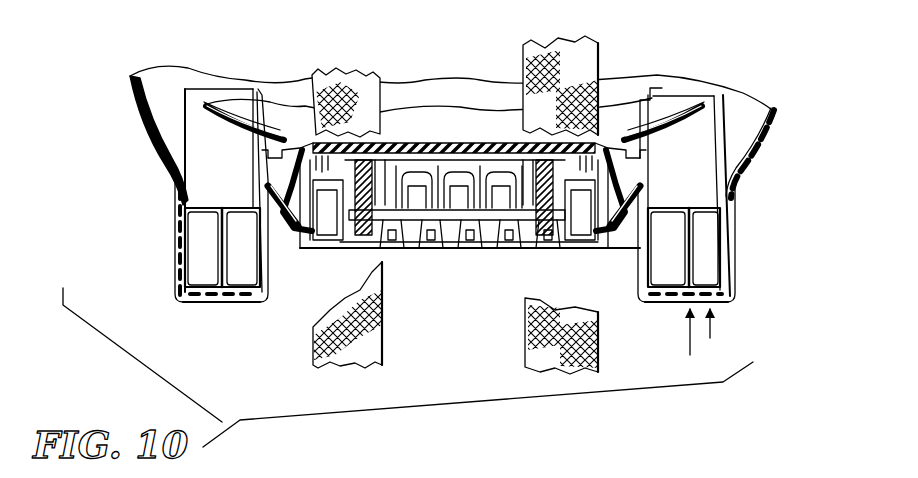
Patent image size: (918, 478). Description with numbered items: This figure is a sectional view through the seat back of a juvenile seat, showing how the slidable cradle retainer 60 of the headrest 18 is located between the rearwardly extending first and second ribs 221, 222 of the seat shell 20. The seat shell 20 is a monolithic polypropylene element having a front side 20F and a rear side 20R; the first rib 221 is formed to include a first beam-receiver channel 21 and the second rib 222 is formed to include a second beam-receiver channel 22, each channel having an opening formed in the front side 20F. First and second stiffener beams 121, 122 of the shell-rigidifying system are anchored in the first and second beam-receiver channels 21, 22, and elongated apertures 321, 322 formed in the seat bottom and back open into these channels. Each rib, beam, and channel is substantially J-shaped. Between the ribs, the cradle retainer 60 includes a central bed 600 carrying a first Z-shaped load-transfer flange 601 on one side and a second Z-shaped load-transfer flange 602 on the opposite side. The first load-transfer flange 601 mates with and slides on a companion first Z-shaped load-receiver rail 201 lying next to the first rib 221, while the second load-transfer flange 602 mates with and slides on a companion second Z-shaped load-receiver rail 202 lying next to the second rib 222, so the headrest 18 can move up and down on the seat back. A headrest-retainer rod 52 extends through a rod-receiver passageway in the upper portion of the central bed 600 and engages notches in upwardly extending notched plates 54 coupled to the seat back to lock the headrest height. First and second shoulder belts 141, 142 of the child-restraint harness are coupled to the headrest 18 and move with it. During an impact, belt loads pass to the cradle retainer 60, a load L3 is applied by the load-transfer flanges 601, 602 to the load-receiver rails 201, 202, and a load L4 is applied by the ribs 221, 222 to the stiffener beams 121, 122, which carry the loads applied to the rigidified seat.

The seat shell 20 is at (128, 95).
The front side of seat shell 20F is at (166, 90).
The rear side of seat shell 20R is at (138, 140).
The first beam-receiver channel 21 is at (705, 200).
The second beam-receiver channel 22 is at (200, 200).
The second stiffener beam 122 is at (210, 265).
The second rib 222 is at (196, 306).
The first stiffener beam 121 is at (700, 250).
The first rib 221 is at (662, 308).
The headrest 18 is at (265, 122).
The second load-receiver rail 202 is at (286, 188).
The first load-receiver rail 201 is at (622, 180).
The second shoulder belt 142 is at (362, 112).
The first shoulder belt 141 is at (592, 55).
The notched plate 54 is at (424, 200).
The central bed 600 is at (488, 168).
The headrest-retainer rod 52 is at (496, 220).
The slidable cradle retainer 60 is at (320, 247).
The second load-transfer flange 602 is at (288, 240).
The first load-transfer flange 601 is at (621, 246).
The elongated aperture 322 is at (277, 207).
The elongated aperture 321 is at (648, 196).
The load L3 is at (688, 342).
The load L4 is at (712, 330).